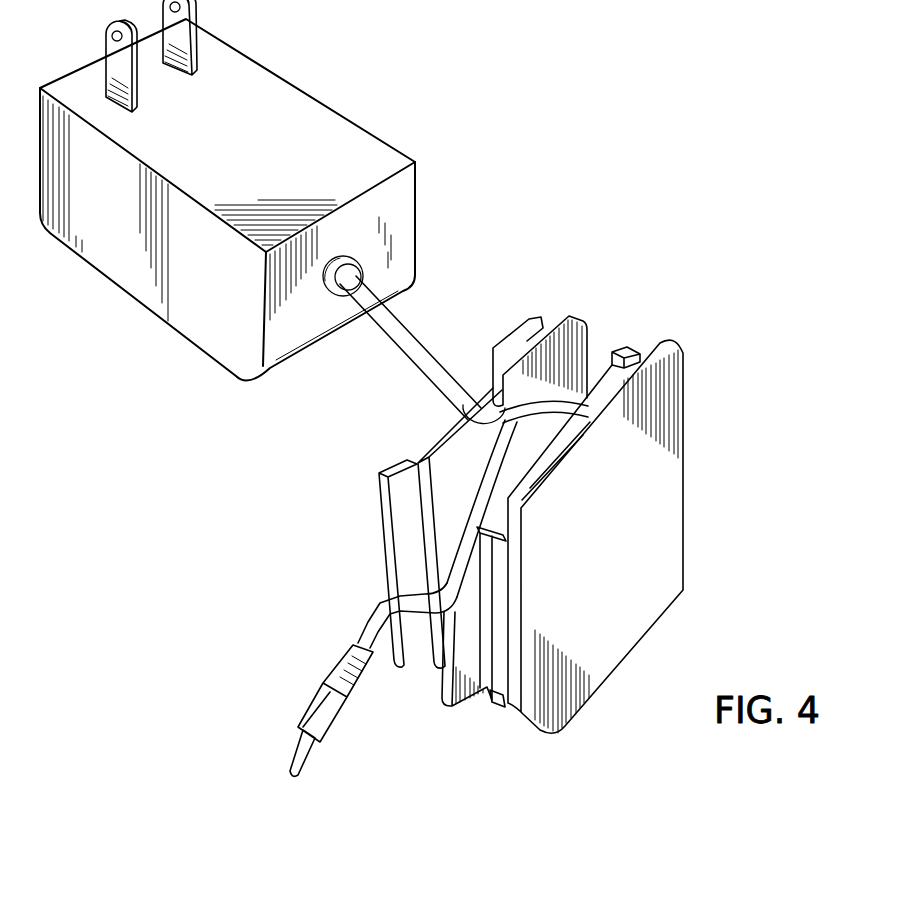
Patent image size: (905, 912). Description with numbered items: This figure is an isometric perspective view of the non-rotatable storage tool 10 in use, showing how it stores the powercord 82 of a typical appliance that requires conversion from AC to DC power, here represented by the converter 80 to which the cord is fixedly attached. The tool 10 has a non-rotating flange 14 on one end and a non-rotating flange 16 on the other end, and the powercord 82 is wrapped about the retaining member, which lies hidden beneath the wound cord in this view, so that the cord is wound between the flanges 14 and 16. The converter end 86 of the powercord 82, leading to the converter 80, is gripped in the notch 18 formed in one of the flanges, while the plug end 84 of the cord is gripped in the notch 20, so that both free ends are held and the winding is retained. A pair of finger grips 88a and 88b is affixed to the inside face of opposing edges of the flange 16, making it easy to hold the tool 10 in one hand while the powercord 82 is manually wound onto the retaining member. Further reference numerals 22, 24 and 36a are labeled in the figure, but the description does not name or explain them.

The storage tool 10 is at (705, 460).
The non-rotating flange 14 is at (440, 682).
The non-rotating flange 16 is at (508, 728).
The notch 18 is at (460, 395).
The notch 20 is at (440, 558).
The plate 22 is at (395, 460).
The slotted plate 24 is at (533, 315).
The prong 36a is at (340, 0).
The converter 80 is at (375, 133).
The powercord 82 is at (540, 440).
The plug end 84 is at (368, 603).
The converter end 86 is at (373, 330).
The finger grip 88a is at (627, 350).
The finger grip 88b is at (500, 703).